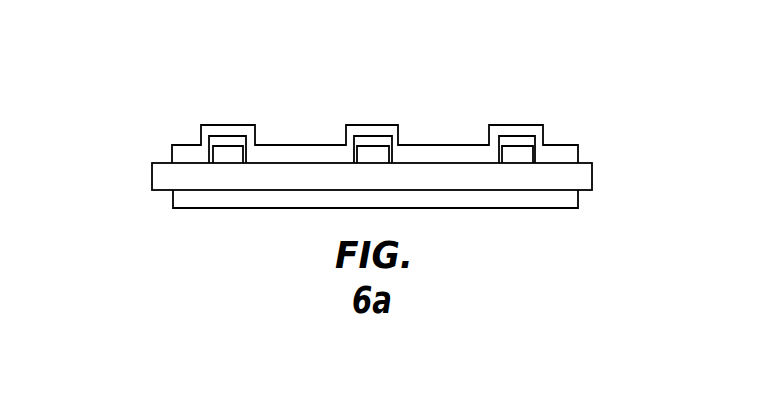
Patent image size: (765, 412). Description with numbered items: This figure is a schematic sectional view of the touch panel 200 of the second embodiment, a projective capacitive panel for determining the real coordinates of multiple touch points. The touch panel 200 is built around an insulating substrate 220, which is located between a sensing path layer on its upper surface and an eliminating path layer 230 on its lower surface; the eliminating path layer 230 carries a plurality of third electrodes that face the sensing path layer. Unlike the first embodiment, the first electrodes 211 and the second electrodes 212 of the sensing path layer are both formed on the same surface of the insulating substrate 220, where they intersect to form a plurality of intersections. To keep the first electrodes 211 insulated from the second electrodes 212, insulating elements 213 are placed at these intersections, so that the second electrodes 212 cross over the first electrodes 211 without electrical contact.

The touch panel 200 is at (122, 100).
The first electrodes 211 is at (570, 153).
The second electrodes 212 is at (510, 157).
The insulating elements 213 is at (523, 142).
The insulating substrate 220 is at (580, 183).
The eliminating path layer 230 is at (175, 205).